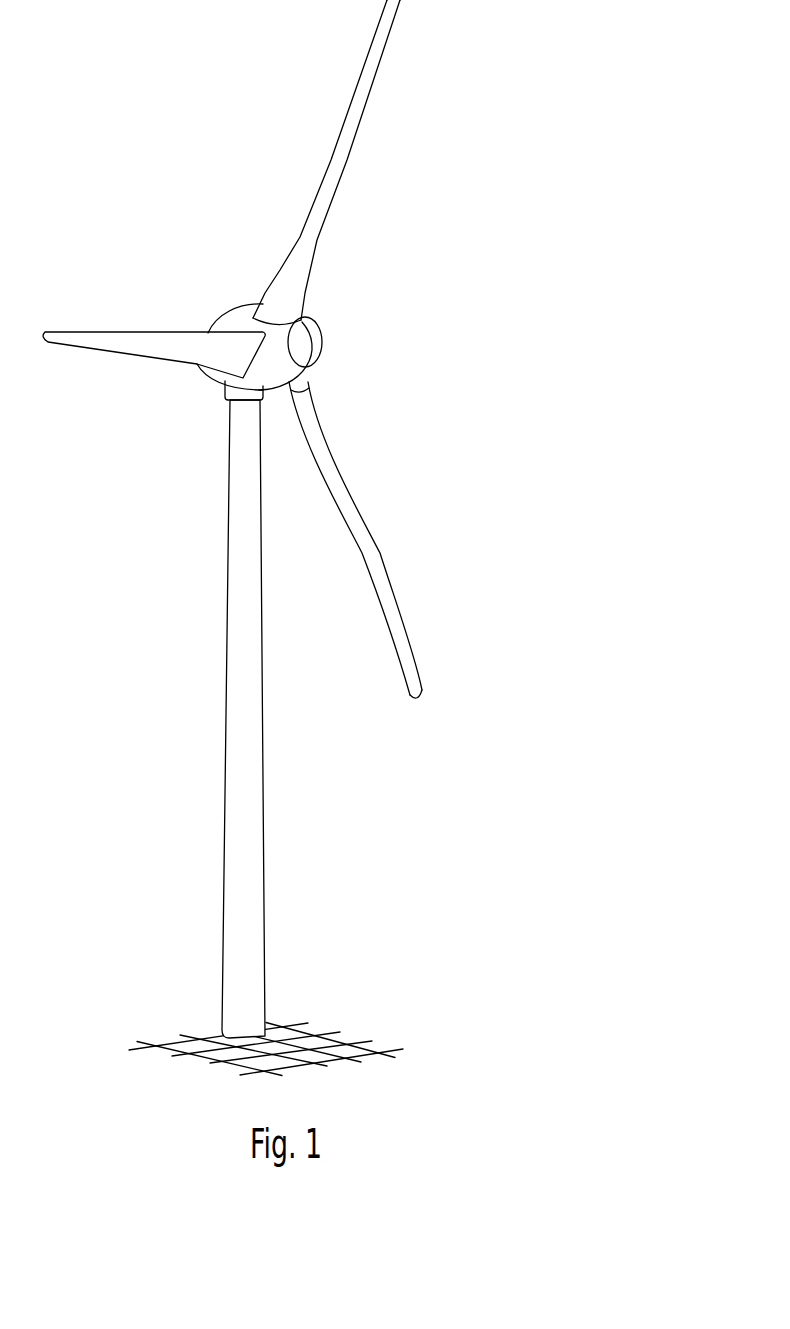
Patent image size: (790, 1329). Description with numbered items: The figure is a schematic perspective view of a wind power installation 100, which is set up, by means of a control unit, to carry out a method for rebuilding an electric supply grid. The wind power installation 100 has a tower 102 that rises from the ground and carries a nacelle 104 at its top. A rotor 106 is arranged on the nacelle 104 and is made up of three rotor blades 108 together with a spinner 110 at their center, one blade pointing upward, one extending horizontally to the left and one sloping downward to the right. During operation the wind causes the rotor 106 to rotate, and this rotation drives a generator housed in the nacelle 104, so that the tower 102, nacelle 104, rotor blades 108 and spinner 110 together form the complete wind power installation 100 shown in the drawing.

The wind power installation 100 is at (270, 538).
The tower 102 is at (248, 815).
The nacelle 104 is at (238, 318).
The rotor 106 is at (270, 349).
The rotor blades 108 is at (357, 108).
The spinner 110 is at (310, 343).